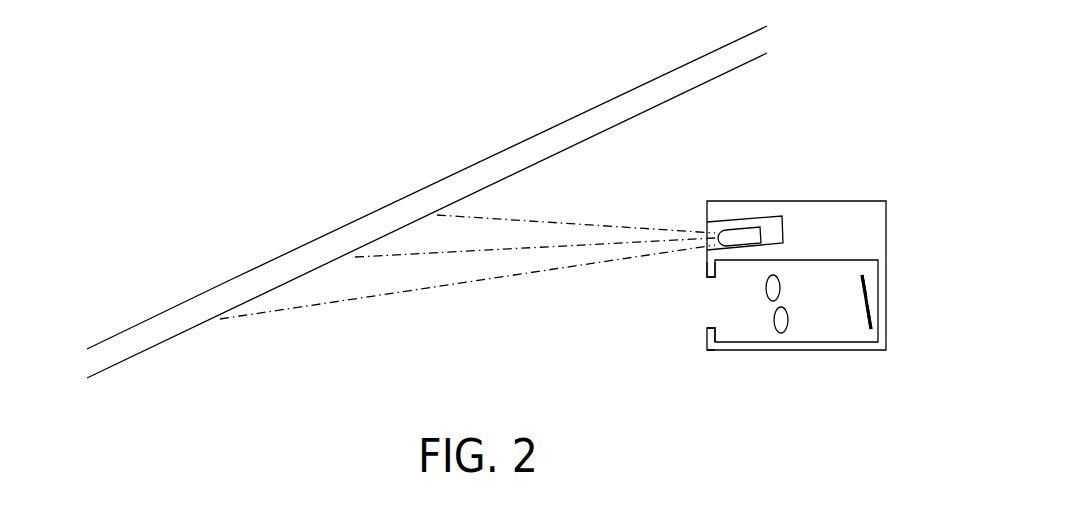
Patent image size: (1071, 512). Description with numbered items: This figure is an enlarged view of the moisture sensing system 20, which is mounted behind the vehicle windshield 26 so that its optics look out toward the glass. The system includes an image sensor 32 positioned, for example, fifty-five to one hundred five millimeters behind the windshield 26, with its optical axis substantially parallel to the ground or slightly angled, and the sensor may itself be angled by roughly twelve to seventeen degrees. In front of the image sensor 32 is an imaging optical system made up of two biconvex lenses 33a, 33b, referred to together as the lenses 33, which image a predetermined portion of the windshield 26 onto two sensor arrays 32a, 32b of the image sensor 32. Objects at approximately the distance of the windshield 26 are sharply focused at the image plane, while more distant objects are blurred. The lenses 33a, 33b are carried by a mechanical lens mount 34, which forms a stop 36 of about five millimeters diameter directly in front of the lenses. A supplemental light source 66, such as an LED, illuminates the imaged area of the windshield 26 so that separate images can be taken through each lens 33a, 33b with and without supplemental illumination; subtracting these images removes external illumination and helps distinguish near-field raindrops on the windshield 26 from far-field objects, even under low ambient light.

The moisture sensing system 20 is at (677, 343).
The vehicle windshield 26 is at (402, 197).
The image sensor 32 is at (867, 300).
The sensor array 32a is at (872, 303).
The sensor array 32b is at (870, 320).
The lenses 33 is at (759, 318).
The biconvex lens 33a is at (775, 285).
The biconvex lens 33b is at (780, 330).
The mechanical lens mount 34 is at (717, 352).
The stop 36 is at (706, 278).
The supplemental light source 66 is at (748, 235).